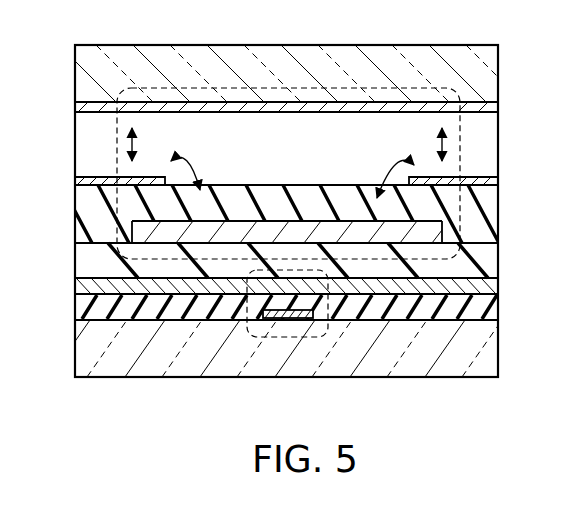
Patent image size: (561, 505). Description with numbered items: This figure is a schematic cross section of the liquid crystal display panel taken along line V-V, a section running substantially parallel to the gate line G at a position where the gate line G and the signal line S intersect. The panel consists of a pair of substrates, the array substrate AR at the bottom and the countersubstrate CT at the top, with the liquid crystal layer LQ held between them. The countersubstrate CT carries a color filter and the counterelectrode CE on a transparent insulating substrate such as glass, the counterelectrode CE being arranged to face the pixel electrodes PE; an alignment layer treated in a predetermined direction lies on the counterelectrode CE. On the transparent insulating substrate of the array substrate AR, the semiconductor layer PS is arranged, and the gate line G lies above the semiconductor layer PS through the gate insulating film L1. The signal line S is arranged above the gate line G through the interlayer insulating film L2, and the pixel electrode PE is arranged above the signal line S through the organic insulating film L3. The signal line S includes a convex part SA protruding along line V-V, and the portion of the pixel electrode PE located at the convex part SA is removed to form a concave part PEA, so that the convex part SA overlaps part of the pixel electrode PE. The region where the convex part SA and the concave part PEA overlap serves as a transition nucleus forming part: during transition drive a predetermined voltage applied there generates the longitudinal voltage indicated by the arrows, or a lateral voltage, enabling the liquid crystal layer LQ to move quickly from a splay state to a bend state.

The line V- V is at (285, 138).
The countersubstrate CT is at (508, 45).
The counterelectrode CE is at (75, 104).
The liquid crystal layer LQ is at (492, 135).
The pixel electrode PE is at (75, 179).
The organic insulating film L3 is at (78, 218).
The signal line S is at (271, 215).
The concave part PEA is at (137, 230).
The convex part SA is at (130, 221).
The interlayer insulating film L2 is at (78, 262).
The gate line G is at (78, 290).
The gate insulating film L1 is at (78, 313).
The semiconductor layer PS is at (285, 319).
The array substrate AR is at (508, 185).